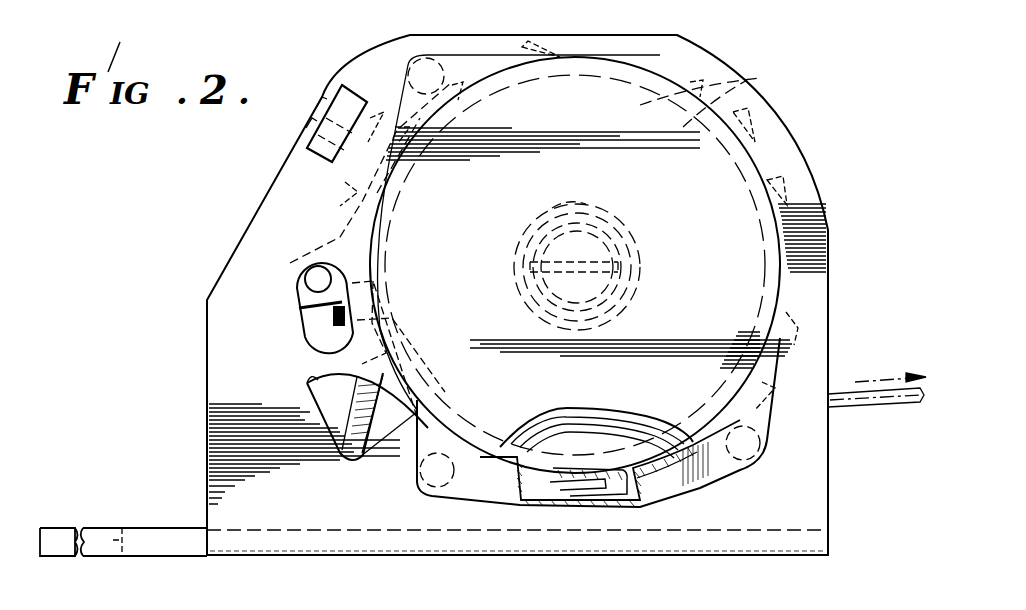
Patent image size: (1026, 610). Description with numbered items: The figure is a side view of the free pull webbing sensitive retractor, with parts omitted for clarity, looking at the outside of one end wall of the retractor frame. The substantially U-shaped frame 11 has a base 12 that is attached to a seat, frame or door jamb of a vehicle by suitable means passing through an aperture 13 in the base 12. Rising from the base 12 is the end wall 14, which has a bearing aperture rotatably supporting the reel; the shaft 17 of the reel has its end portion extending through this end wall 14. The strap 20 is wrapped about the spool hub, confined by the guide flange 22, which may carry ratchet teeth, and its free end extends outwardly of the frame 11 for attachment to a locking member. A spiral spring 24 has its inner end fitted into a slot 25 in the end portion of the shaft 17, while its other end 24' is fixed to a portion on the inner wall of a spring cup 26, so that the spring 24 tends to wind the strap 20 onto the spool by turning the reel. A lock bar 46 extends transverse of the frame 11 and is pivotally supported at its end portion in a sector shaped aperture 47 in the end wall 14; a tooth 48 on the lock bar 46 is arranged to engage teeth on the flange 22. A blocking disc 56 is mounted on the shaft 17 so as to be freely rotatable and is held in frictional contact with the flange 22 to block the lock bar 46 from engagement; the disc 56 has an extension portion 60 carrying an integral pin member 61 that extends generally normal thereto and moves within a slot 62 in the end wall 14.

The frame 11 is at (355, 557).
The base 12 is at (178, 545).
The aperture 13 is at (116, 530).
The end wall 14 is at (280, 204).
The shaft 17 is at (593, 288).
The strap 20 is at (858, 408).
The guide flange 22 is at (752, 133).
The spiral spring 24 is at (577, 251).
The other end of spring 24' is at (598, 461).
The slot 25 is at (617, 268).
The spring cup 26 is at (604, 100).
The lock bar 46 is at (355, 422).
The sector shaped aperture 47 is at (345, 388).
The tooth 48 is at (392, 358).
The blocking disc 56 is at (740, 80).
The extension portion 60 is at (340, 237).
The pin member 61 is at (314, 280).
The slot 62 is at (306, 328).